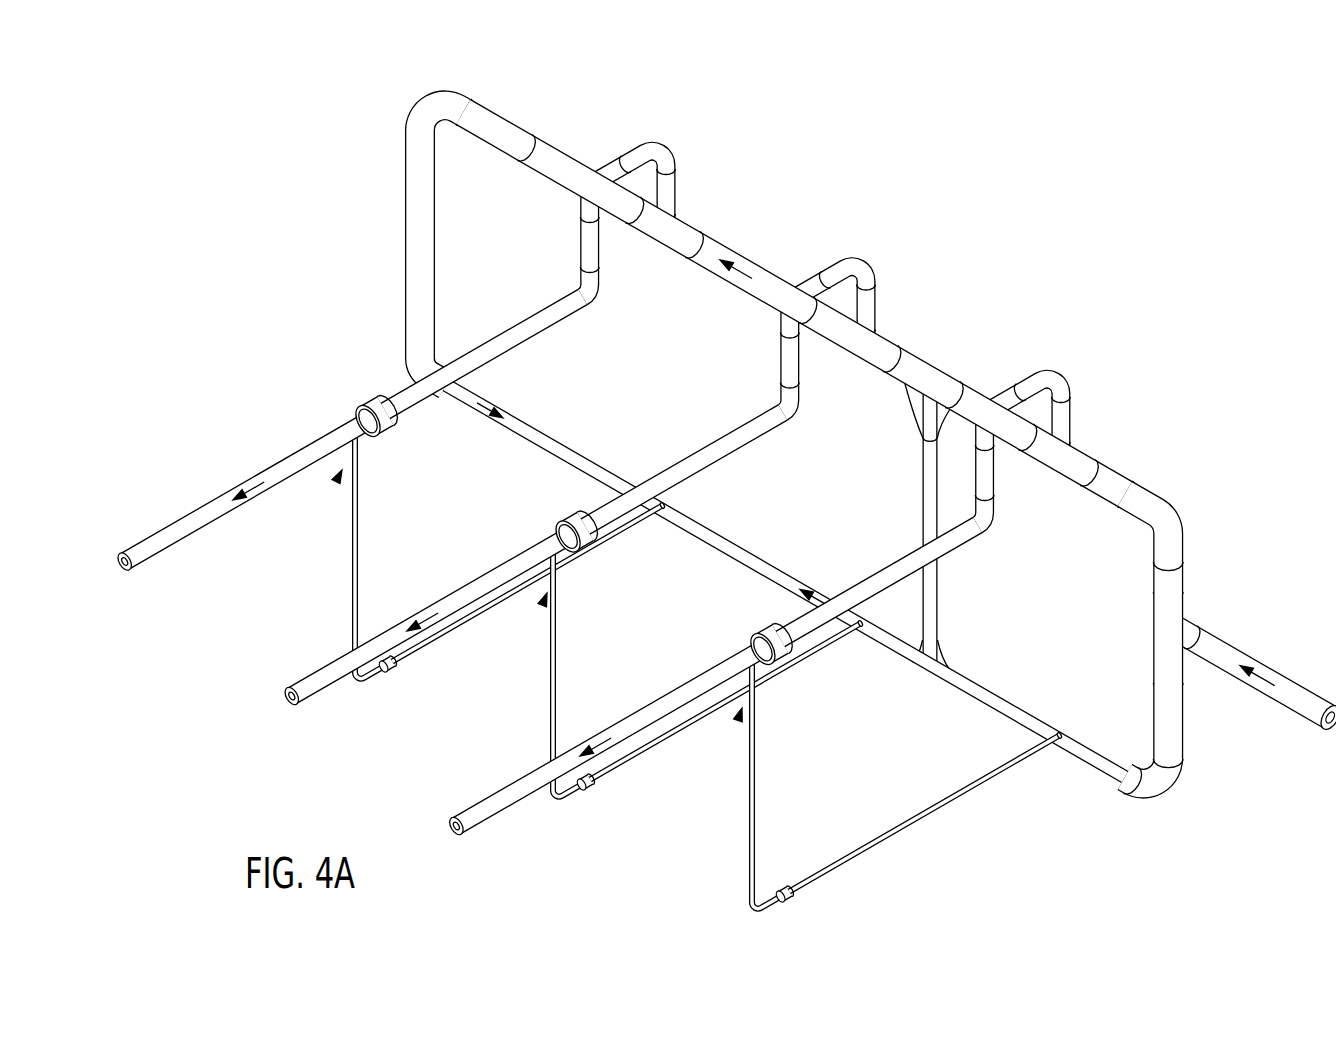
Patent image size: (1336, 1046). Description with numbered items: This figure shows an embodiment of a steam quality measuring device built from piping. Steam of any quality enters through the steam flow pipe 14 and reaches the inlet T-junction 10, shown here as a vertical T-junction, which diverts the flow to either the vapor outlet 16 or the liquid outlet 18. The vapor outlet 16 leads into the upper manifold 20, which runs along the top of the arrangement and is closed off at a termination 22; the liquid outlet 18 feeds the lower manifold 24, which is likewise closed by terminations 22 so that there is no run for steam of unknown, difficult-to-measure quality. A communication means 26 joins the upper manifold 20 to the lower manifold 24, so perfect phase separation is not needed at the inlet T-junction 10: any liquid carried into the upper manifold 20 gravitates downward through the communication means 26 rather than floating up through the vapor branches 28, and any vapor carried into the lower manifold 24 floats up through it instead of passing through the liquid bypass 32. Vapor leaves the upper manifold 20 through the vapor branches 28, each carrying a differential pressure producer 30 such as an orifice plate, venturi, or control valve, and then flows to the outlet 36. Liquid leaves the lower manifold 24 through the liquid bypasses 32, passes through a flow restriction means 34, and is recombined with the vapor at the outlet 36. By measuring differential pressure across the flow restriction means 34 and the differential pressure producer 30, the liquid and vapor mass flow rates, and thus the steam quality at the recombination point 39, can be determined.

The inlet T-junction 10 is at (1190, 610).
The steam flow pipe 14 is at (1250, 653).
The vapor outlet 16 is at (1180, 537).
The liquid outlet 18 is at (1143, 800).
The upper manifold 20 is at (735, 252).
The termination 22 is at (462, 94).
The lower manifold 24 is at (607, 460).
The communication means 26 is at (920, 473).
The vapor branch 28 is at (627, 160).
The differential pressure producer 30 is at (390, 433).
The liquid bypass 32 is at (470, 627).
The flow restriction means 34 is at (387, 673).
The outlet 36 is at (220, 520).
The recombination point 39 is at (337, 480).